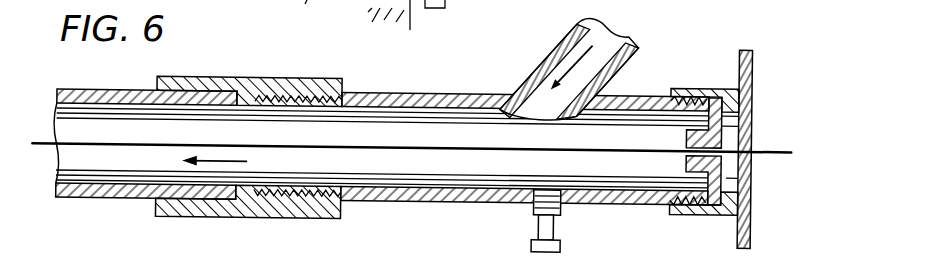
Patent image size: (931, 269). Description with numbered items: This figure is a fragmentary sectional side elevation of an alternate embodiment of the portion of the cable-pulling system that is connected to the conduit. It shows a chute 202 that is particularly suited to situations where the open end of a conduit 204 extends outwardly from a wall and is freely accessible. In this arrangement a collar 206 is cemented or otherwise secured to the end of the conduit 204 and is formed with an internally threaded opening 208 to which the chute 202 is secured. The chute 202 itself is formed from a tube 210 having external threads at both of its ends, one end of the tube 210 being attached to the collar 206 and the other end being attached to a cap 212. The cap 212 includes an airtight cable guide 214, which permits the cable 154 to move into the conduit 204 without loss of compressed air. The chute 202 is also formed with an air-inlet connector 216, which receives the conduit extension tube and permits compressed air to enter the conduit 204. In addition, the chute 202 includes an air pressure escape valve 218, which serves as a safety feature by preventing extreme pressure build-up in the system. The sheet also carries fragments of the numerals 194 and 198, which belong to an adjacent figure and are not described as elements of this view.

The cable 154 is at (777, 155).
The element (adjacent figure) 194 is at (351, 14).
The element (adjacent figure) 198 is at (289, 8).
The chute 202 is at (690, 36).
The conduit 204 is at (100, 92).
The collar 206 is at (218, 83).
The internally threaded opening 208 is at (329, 75).
The tube 210 is at (463, 197).
The cap 212 is at (752, 51).
The airtight cable guide 214 is at (722, 138).
The air-inlet connector 216 is at (548, 49).
The air pressure escape valve 218 is at (557, 230).